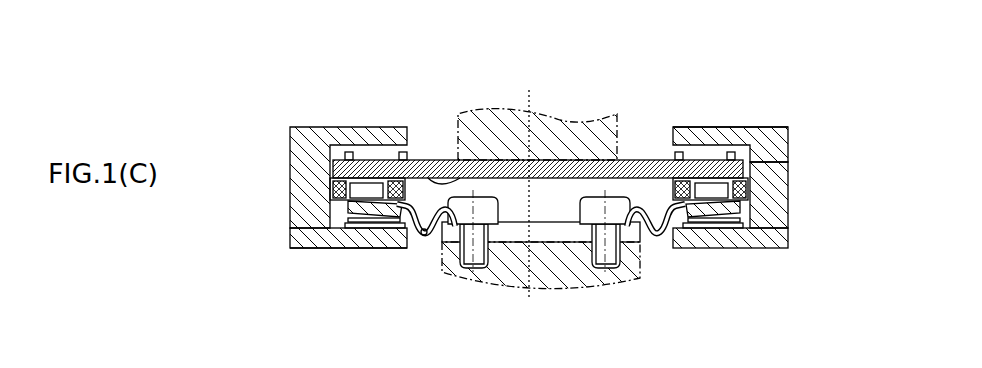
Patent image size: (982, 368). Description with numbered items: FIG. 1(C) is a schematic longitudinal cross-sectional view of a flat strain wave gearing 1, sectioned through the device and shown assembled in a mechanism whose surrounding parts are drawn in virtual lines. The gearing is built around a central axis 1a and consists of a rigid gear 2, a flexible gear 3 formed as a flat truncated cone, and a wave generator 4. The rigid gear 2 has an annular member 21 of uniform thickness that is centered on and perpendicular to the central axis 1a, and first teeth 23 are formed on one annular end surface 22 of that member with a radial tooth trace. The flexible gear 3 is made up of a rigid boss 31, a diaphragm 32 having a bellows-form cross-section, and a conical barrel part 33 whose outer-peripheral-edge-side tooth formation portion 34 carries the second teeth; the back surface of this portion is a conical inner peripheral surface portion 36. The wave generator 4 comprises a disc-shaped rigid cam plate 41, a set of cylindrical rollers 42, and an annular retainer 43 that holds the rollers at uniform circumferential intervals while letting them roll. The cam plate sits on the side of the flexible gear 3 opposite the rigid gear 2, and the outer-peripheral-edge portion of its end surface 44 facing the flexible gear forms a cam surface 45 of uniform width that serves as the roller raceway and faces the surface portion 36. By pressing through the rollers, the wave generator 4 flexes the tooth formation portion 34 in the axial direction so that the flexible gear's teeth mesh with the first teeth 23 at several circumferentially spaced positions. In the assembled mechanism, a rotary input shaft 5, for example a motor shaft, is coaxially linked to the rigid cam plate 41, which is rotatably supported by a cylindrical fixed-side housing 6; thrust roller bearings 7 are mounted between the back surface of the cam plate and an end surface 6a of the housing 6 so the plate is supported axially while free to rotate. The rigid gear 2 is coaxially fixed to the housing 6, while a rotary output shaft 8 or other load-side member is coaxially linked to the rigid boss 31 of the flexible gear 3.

The flat strain wave gearing 1 is at (529, 173).
The central axis 1a is at (548, 93).
The rigid gear 2 is at (520, 280).
The annular member 21 is at (752, 250).
The annular end surface 22 is at (750, 212).
The first teeth 23 is at (748, 172).
The flexible gear 3 is at (662, 252).
The rigid boss 31 is at (446, 270).
The diaphragm 32 is at (430, 233).
The conical barrel part 33 is at (375, 248).
The tooth formation portion 34 is at (312, 274).
The conical inner peripheral surface portion 36 is at (425, 235).
The wave generator 4 is at (657, 150).
The rigid cam plate 41 is at (330, 180).
The cylindrical rollers 42 is at (368, 186).
The annular retainer 43 is at (350, 192).
The end surface 44 is at (428, 180).
The cam surface 45 is at (345, 215).
The rotary input shaft 5 is at (585, 113).
The housing 6 is at (758, 135).
The end surface 6a is at (770, 135).
The thrust roller bearings 7 is at (682, 150).
The rotary output shaft 8 is at (570, 292).